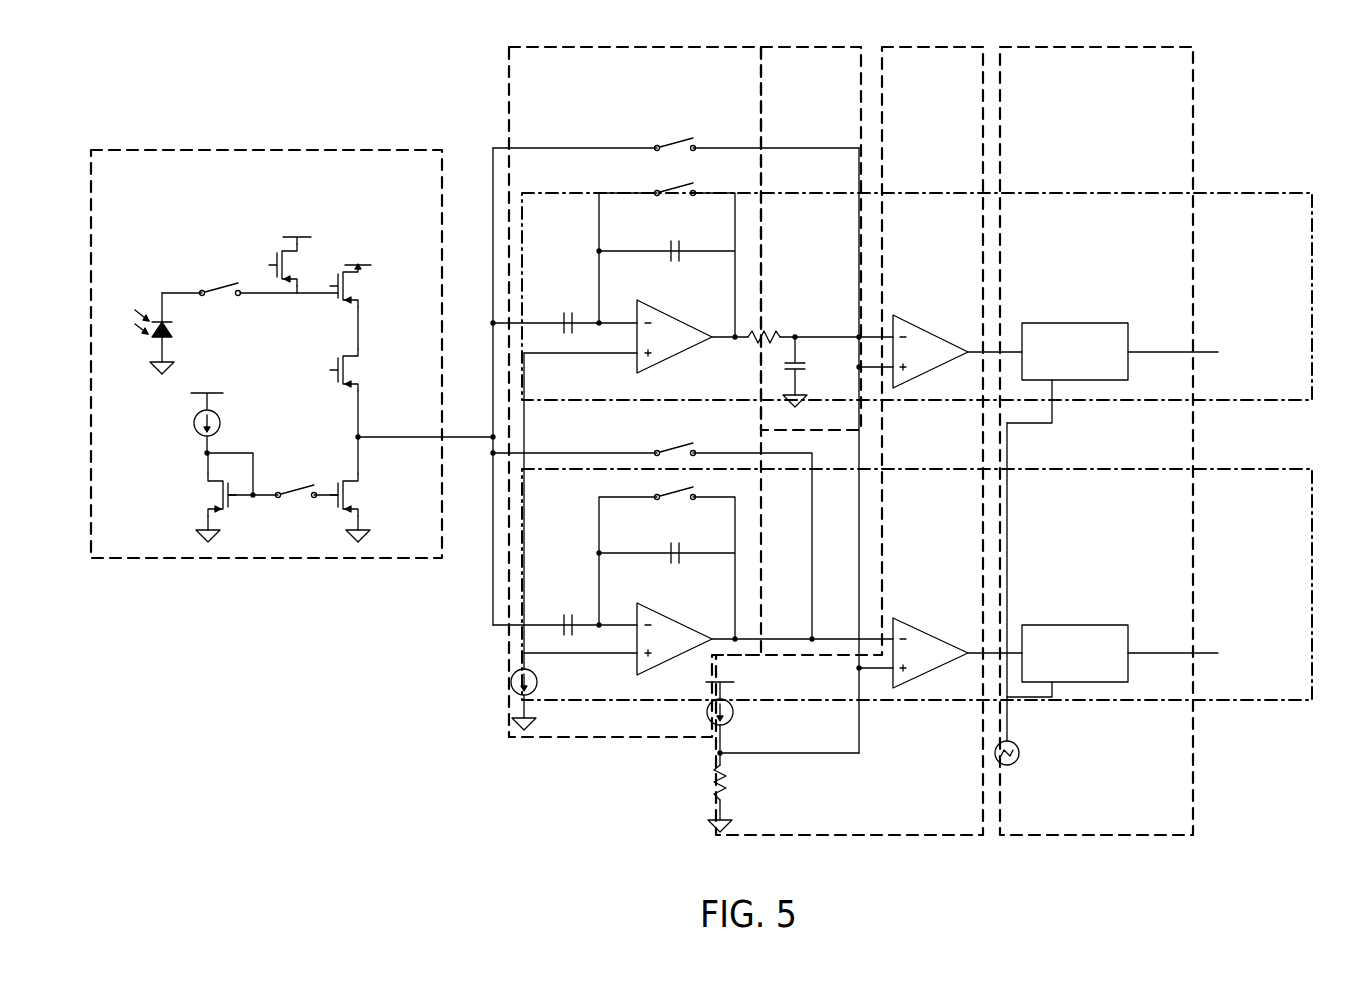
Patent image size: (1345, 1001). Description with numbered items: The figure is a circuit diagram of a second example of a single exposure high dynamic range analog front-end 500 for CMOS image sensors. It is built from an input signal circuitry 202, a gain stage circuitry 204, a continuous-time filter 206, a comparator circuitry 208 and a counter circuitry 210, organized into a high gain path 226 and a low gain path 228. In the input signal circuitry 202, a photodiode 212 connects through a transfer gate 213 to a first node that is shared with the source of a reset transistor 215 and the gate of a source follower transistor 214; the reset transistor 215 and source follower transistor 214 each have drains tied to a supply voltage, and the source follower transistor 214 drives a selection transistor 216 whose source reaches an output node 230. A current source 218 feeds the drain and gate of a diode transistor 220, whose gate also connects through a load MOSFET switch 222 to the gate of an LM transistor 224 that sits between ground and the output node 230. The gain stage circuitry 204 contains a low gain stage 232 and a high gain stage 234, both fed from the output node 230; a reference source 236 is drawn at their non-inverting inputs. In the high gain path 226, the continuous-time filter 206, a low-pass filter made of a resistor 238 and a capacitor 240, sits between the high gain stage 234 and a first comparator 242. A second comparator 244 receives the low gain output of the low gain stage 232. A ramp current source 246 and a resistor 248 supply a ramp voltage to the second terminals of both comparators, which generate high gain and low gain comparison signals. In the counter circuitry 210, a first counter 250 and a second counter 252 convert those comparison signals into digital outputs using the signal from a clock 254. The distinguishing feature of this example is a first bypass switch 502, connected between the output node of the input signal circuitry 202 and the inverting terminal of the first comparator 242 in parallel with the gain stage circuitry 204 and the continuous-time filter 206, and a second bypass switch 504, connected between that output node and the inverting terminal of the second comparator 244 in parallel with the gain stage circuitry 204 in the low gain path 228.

The input circuitry 202 is at (266, 354).
The gain stage circuitry 204 is at (635, 392).
The continuous-time filter 206 is at (800, 46).
The comparator circuitry 208 is at (905, 46).
The counter circuitry 210 is at (1096, 441).
The photodiode 212 is at (163, 320).
The transfer gate 213 is at (228, 286).
The source follower transistor 214 is at (340, 288).
The reset transistor 215 is at (276, 262).
The selection transistor 216 is at (338, 372).
The current source 218 is at (196, 420).
The diode transistor 220 is at (220, 507).
The load MOSFET switch 222 is at (305, 488).
The LM transistor 224 is at (339, 492).
The high gain path 226 is at (917, 296).
The low gain path 228 is at (917, 584).
The output node 230 is at (357, 438).
The low gain stage 232 is at (606, 523).
The high gain stage 234 is at (601, 234).
The reference voltage source 236 is at (530, 698).
The resistor 238 is at (775, 335).
The capacitor 240 is at (798, 364).
The first comparator 242 is at (910, 325).
The second comparator 244 is at (913, 628).
The ramp current source 246 is at (732, 722).
The resistor 248 is at (724, 800).
The first counter 250 is at (1105, 323).
The second counter 252 is at (1105, 625).
The clock 254 is at (1015, 745).
The single exposure HDR analog front-end 500 is at (1232, 111).
The first bypass switch 502 is at (678, 146).
The second bypass switch 504 is at (663, 452).